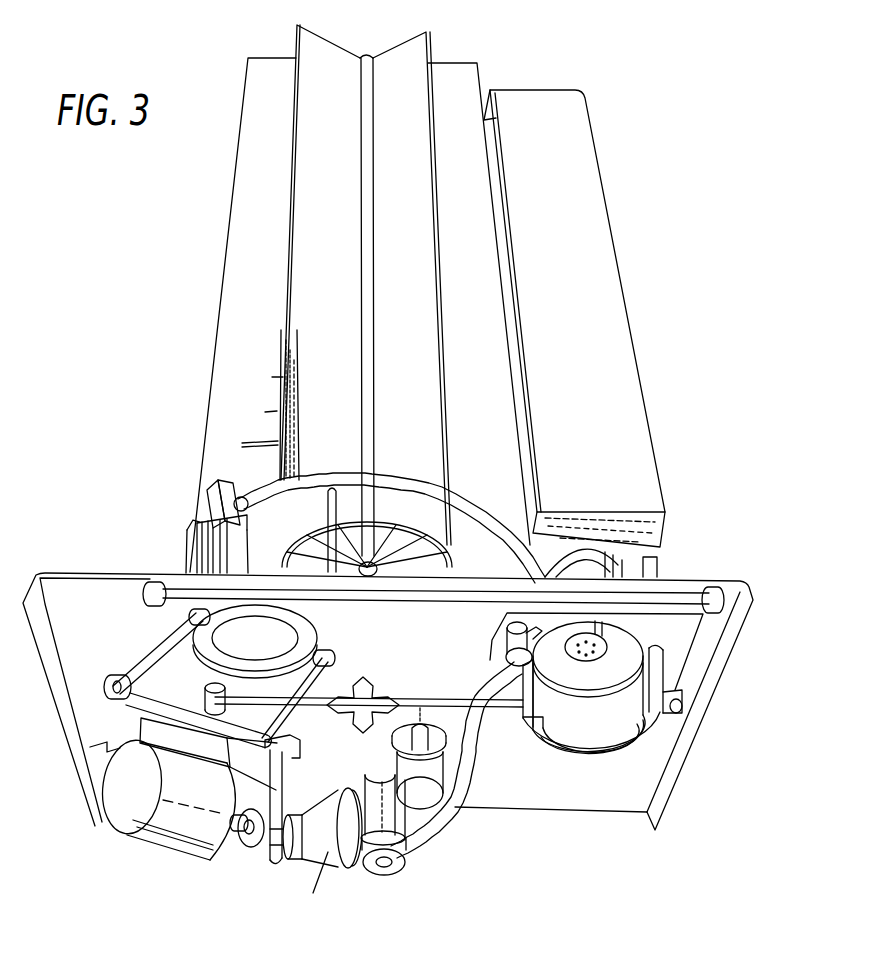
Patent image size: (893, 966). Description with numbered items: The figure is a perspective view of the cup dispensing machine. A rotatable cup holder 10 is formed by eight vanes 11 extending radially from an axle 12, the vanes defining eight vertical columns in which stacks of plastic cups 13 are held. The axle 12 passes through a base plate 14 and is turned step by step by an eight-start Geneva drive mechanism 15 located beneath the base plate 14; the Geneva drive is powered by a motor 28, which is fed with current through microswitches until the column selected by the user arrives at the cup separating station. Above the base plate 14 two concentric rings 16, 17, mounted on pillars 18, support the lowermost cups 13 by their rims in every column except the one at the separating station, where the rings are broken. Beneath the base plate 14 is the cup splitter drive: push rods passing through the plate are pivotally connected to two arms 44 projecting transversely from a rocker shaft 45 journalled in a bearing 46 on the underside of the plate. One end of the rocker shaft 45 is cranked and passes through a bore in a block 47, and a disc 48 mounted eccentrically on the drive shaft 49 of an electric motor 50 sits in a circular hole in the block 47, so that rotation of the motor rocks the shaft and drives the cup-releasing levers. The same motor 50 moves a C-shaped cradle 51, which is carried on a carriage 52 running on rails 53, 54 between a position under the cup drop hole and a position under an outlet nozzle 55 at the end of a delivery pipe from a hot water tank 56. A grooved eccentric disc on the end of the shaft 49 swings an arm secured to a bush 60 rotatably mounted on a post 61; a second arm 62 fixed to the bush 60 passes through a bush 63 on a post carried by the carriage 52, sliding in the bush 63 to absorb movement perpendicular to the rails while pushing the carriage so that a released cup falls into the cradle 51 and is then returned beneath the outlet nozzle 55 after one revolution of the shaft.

The rotatable cup holder 10 is at (213, 331).
The vanes 11 is at (508, 380).
The axle 12 is at (365, 247).
The plastic cups 13 is at (316, 547).
The base plate 14 is at (78, 565).
The Geneva drive mechanism 15 is at (388, 678).
The ring 16 is at (468, 498).
The ring 17 is at (405, 546).
The pillars 18 is at (327, 497).
The motor 28 is at (428, 767).
The arms 44 is at (180, 643).
The rocker shaft 45 is at (147, 680).
The bearing 46 is at (115, 678).
The block 47 is at (265, 863).
The disc 48 is at (248, 842).
The drive shaft 49 is at (243, 828).
The electric motor 50 is at (123, 765).
The cradle 51 is at (657, 733).
The carriage 52 is at (677, 652).
The rail 53 is at (173, 588).
The rail 54 is at (440, 700).
The outlet nozzle 55 is at (607, 645).
The hot water tank 56 is at (635, 342).
The bush 60 is at (375, 866).
The post 61 is at (390, 868).
The second arm 62 is at (425, 830).
The bush 63 is at (504, 627).